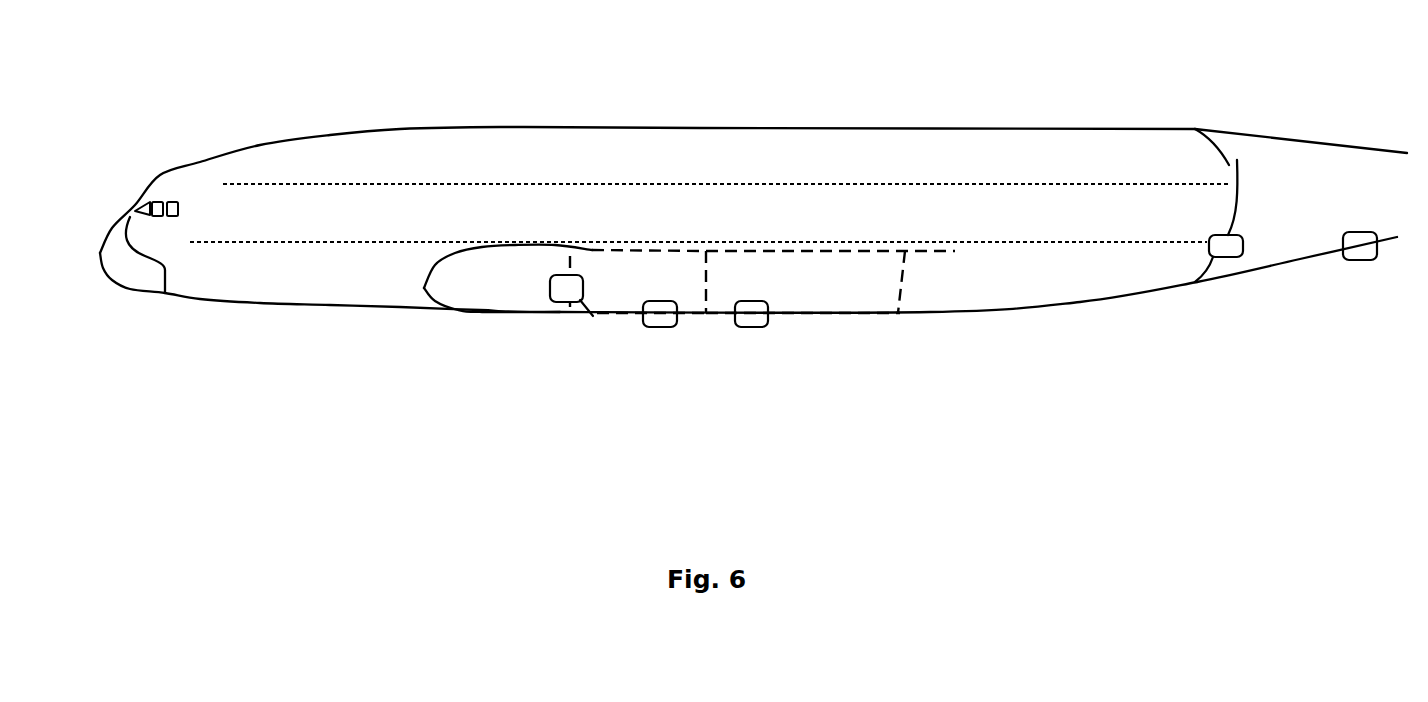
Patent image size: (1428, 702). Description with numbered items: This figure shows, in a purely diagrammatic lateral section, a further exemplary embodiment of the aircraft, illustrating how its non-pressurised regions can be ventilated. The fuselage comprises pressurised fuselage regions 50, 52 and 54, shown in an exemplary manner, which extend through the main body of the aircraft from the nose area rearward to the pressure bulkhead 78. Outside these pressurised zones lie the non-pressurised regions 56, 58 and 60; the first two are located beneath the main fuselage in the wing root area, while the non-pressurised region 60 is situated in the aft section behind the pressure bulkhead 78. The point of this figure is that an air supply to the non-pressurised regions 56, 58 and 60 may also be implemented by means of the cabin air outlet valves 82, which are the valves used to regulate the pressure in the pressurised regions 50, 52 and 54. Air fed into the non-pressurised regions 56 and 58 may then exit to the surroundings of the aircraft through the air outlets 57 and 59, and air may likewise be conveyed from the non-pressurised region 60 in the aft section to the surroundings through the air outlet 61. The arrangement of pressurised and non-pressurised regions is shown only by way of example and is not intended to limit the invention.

The pressurised fuselage region 50 is at (762, 147).
The pressurised fuselage region 52 is at (988, 228).
The pressurised fuselage region 54 is at (205, 202).
The non-pressurised region 56 is at (633, 288).
The air outlet 57 is at (655, 327).
The non-pressurised region 58 is at (827, 295).
The air outlet 59 is at (750, 327).
The non-pressurised region 60 is at (1317, 162).
The air outlet 61 is at (1362, 258).
The pressure bulkhead 78 is at (1237, 160).
The cabin air outlet valve 82 is at (562, 289).